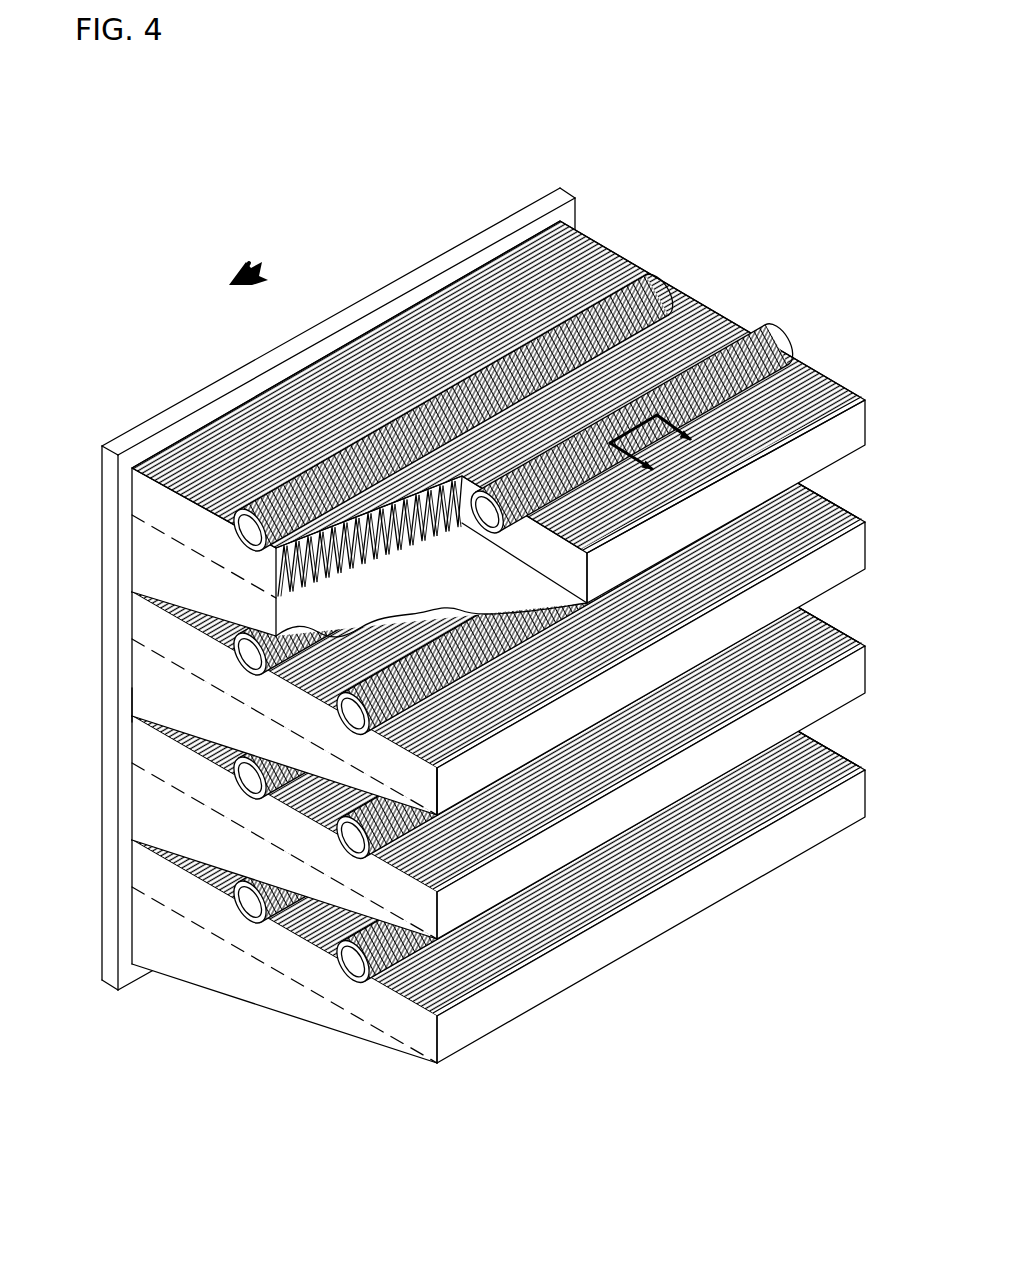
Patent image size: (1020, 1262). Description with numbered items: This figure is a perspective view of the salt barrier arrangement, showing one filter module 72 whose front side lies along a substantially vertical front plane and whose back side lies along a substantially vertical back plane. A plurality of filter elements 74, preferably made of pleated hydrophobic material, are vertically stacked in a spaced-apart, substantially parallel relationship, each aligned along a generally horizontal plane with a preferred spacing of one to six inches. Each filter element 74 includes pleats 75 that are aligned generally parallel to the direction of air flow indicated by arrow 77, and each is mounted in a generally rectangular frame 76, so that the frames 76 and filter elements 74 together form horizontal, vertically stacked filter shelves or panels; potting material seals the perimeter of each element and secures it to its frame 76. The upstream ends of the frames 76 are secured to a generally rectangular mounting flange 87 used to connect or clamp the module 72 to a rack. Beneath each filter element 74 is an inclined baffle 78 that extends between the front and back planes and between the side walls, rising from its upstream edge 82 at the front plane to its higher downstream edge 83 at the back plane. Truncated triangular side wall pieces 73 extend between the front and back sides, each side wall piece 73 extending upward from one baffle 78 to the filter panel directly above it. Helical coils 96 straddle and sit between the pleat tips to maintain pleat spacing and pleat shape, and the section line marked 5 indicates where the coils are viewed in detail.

The filter module 72 is at (399, 196).
The side wall pieces 73 is at (150, 578).
The filter element 74 is at (573, 273).
The pleats 75 is at (410, 482).
The frame 76 is at (843, 393).
The arrow indicating direction of air flow 77 is at (249, 263).
The inclined baffle 78 is at (472, 594).
The upstream edge 82 is at (129, 695).
The downstream edge 83 is at (442, 812).
The mounting flange 87 is at (556, 192).
The helical coil 96 is at (663, 302).
The section line 5- 5 is at (668, 459).